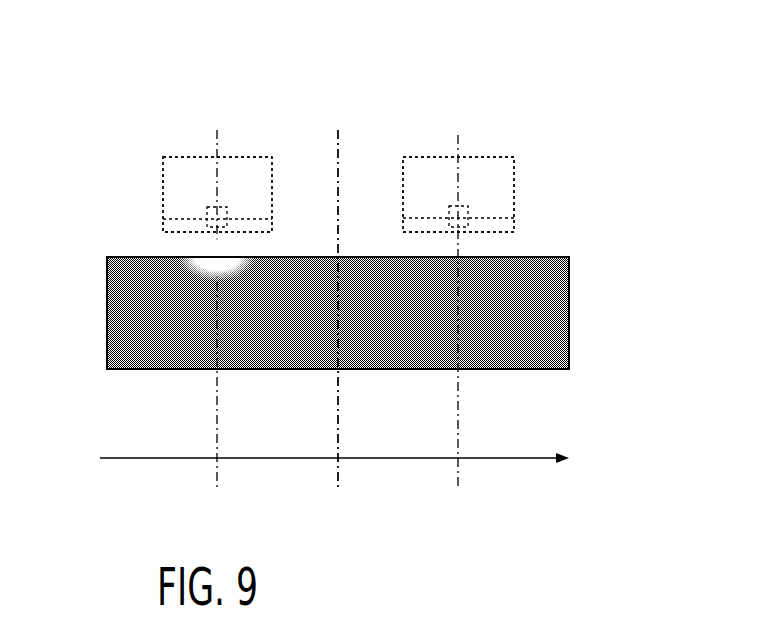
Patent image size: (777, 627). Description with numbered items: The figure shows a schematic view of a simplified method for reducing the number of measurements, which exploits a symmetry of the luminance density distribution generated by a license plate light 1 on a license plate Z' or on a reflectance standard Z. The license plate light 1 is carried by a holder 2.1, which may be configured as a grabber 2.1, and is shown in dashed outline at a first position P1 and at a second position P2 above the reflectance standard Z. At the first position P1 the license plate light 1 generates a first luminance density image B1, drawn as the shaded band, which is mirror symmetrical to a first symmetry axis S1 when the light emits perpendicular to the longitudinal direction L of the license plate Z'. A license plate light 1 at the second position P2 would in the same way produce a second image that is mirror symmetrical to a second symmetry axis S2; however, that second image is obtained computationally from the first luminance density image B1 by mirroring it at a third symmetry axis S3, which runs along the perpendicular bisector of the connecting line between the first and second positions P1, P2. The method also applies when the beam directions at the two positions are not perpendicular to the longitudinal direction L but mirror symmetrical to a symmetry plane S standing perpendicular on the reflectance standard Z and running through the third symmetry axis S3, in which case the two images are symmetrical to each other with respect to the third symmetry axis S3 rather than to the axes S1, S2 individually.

The license plate light 1 is at (217, 230).
The holder 2.1 is at (193, 173).
The first position P1 is at (282, 128).
The second position P2 is at (536, 176).
The first luminance density image B1 is at (108, 304).
The reflectance standard Z is at (380, 313).
The license plate Z' is at (392, 313).
The symmetry plane S is at (325, 330).
The first symmetry axis S1 is at (219, 330).
The second symmetry axis S2 is at (460, 331).
The third symmetry axis S3 is at (356, 330).
The longitudinal direction L is at (338, 484).